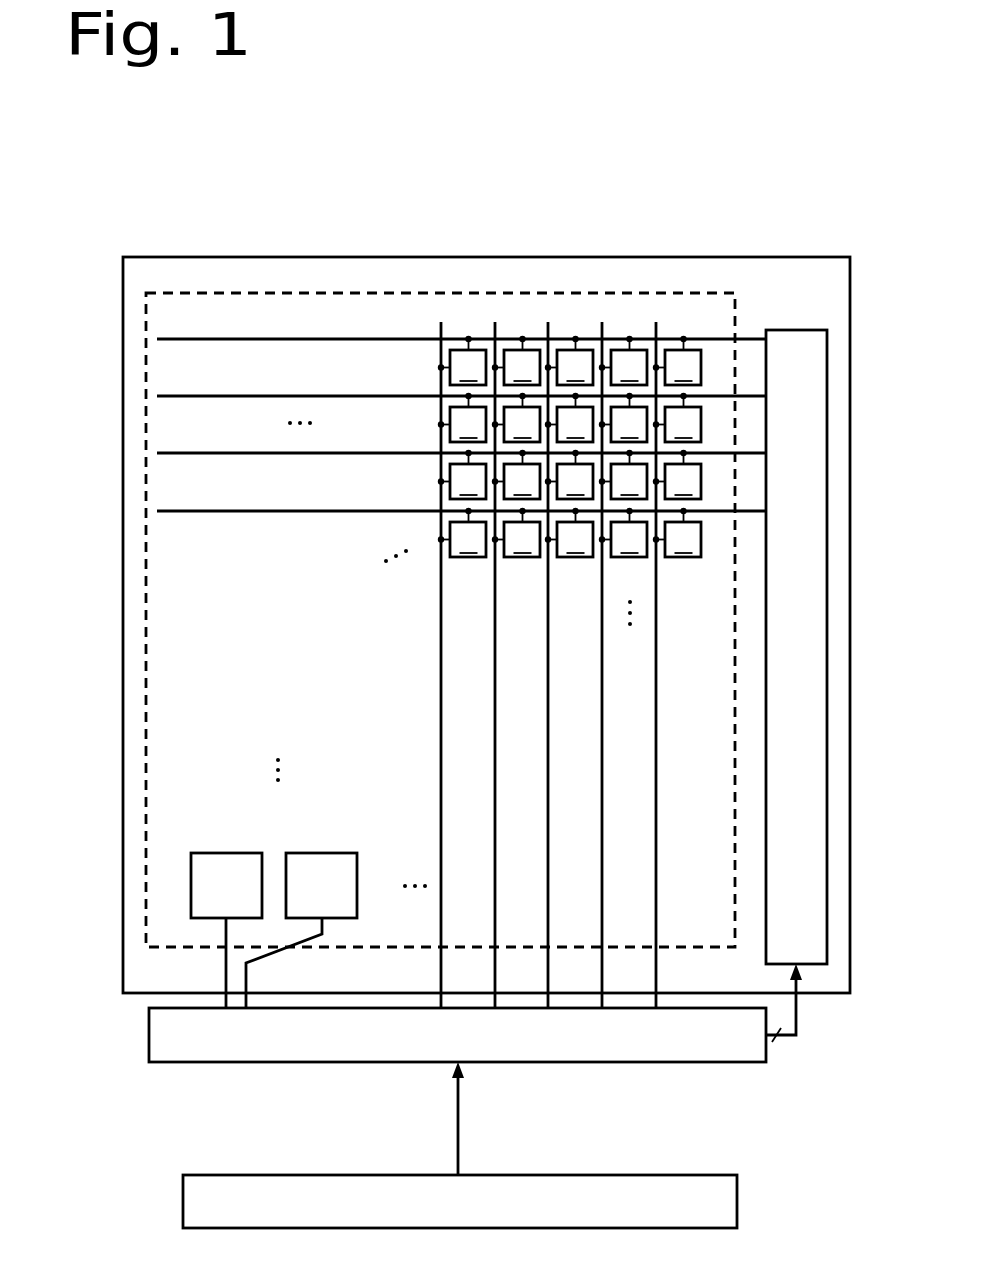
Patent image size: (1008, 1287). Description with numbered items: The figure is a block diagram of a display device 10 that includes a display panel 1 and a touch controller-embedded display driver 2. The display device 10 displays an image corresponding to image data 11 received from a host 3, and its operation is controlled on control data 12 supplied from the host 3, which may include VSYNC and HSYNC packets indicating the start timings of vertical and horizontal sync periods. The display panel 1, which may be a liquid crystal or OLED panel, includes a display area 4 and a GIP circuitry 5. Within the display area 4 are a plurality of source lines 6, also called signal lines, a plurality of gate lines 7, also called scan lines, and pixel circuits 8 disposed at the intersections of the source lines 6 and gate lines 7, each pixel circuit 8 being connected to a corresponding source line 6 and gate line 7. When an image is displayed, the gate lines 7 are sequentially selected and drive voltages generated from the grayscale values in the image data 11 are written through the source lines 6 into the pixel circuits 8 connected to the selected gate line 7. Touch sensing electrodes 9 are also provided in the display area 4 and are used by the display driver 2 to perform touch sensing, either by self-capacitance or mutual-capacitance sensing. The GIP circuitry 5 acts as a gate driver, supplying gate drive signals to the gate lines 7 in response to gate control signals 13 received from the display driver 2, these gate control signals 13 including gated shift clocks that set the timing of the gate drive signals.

The display device 10 is at (772, 213).
The display panel 1 is at (833, 257).
The touch controller-embedded display driver 2 is at (148, 1049).
The host 3 is at (738, 1202).
The display area 4 is at (737, 296).
The GIP circuitry 5 is at (800, 330).
The source lines 6 is at (443, 753).
The gate lines 7 is at (318, 340).
The pixel circuits 8 is at (569, 446).
The touch sensing electrodes 9 is at (228, 853).
The image data 11 is at (502, 1118).
The control data 12 is at (460, 1113).
The gate control signals 13 is at (788, 1040).